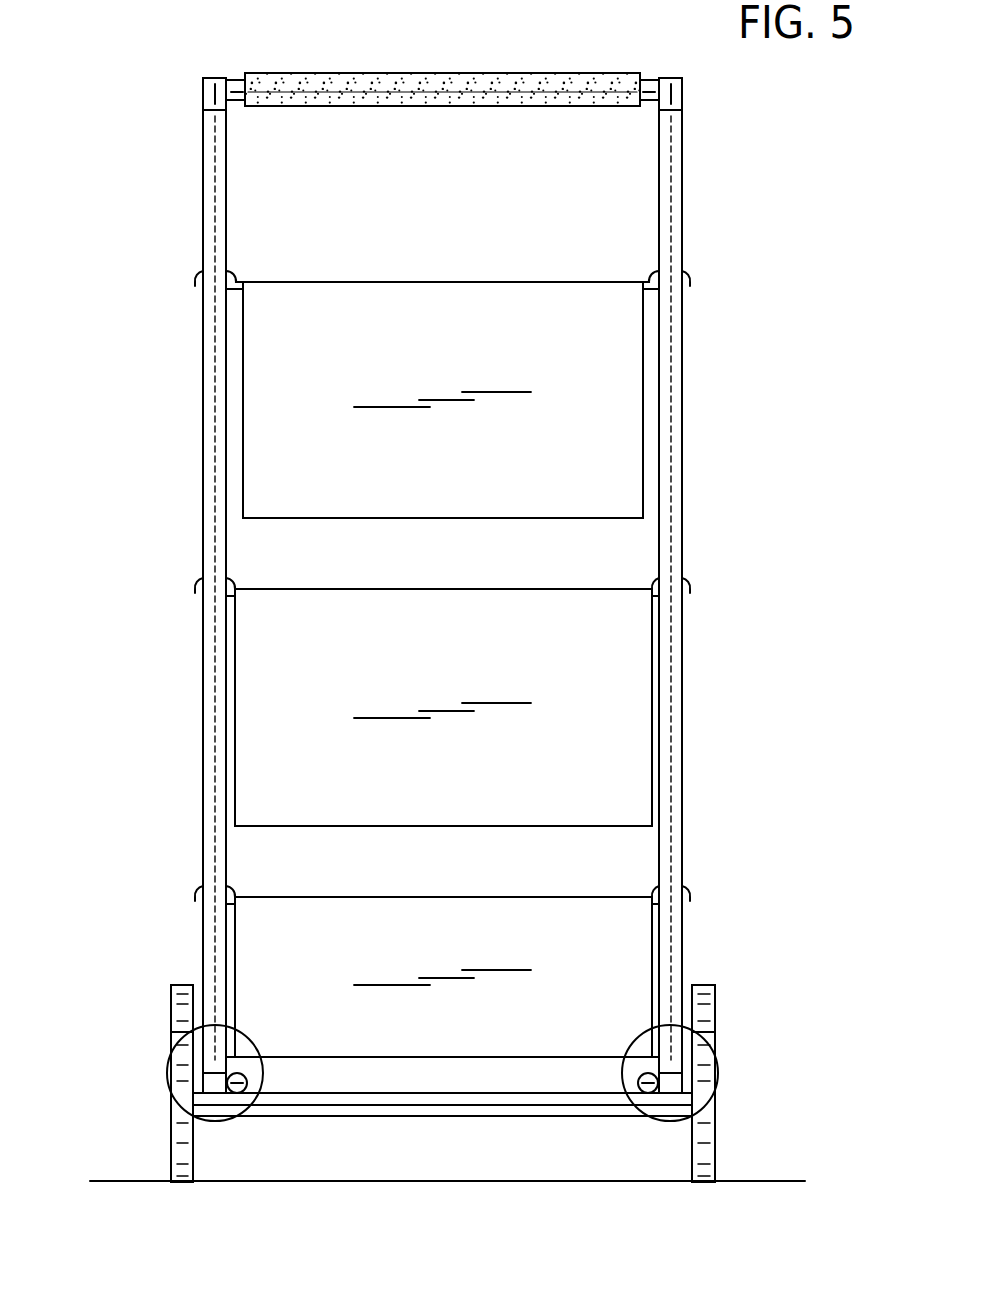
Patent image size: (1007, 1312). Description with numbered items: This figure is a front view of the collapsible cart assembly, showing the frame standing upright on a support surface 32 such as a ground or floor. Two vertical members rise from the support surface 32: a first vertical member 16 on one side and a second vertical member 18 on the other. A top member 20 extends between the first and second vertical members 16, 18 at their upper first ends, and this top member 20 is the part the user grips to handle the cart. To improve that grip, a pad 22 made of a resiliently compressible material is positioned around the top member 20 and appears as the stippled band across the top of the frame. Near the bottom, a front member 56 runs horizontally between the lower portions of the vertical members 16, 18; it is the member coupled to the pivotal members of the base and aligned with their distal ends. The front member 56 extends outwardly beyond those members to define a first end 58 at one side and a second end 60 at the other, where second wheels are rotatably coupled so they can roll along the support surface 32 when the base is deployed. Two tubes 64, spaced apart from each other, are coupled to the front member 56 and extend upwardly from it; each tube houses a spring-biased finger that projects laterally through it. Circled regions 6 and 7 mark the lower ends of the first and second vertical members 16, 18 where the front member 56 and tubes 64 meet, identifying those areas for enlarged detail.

The first vertical member 16 is at (210, 216).
The second vertical member 18 is at (678, 213).
The top member 20 is at (236, 78).
The pad 22 is at (415, 76).
The support surface 32 is at (115, 1181).
The front member 56 is at (472, 1117).
The first end 58 is at (197, 1105).
The second end 60 is at (690, 1103).
The tubes 64 is at (203, 1080).
The detail area of FIG. 6 is at (203, 1080).
The detail area of FIG. 7 is at (682, 1078).